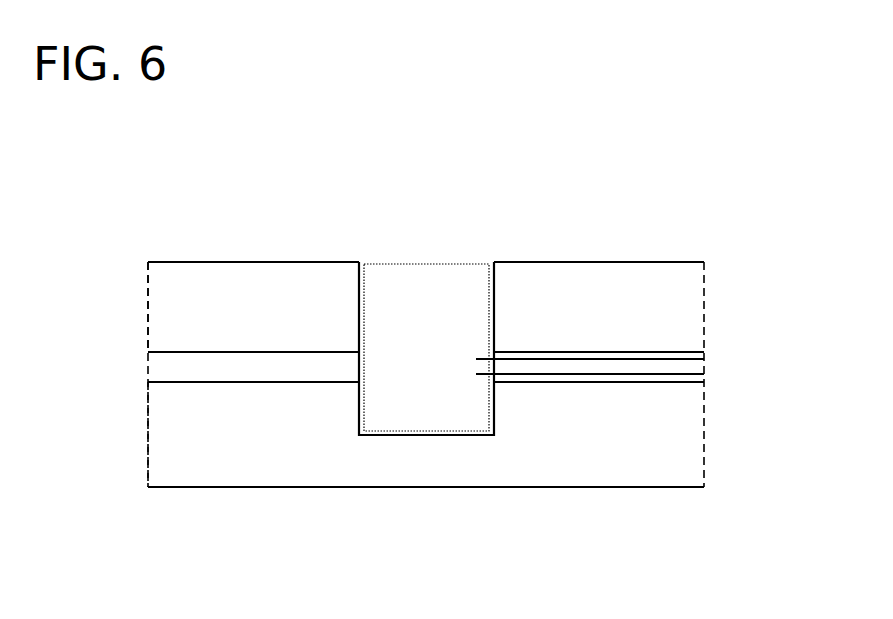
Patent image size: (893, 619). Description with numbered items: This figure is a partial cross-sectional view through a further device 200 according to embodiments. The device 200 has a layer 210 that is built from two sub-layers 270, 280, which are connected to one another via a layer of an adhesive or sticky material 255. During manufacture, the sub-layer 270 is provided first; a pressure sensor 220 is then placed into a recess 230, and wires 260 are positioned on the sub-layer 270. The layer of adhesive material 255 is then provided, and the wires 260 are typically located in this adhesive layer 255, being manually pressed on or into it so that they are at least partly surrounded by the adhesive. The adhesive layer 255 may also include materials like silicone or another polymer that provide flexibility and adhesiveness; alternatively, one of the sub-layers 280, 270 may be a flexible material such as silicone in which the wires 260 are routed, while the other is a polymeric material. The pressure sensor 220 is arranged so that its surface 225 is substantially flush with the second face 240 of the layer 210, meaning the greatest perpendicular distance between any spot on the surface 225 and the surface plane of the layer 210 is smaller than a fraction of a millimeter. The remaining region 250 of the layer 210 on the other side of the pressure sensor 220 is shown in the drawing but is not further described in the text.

The device 200 is at (784, 593).
The layer 210 is at (283, 470).
The pressure sensor 220 is at (430, 275).
The surface of the pressure sensor 225 is at (377, 260).
The recess 230 is at (427, 437).
The second face 240 is at (244, 260).
The right region 250 is at (617, 487).
The layer of adhesive material 255 is at (155, 365).
The wires 260 is at (605, 373).
The sub-layer 270 is at (168, 453).
The sub-layer 280 is at (165, 296).